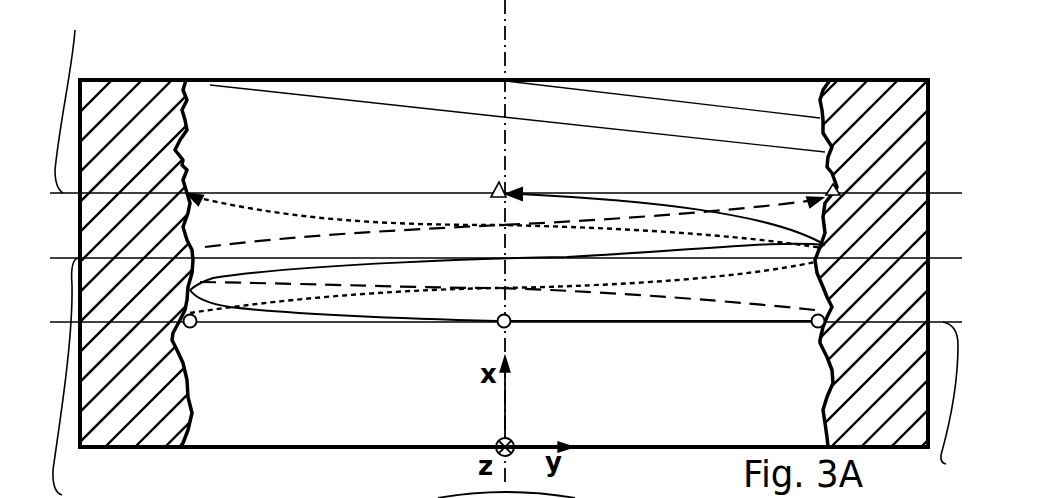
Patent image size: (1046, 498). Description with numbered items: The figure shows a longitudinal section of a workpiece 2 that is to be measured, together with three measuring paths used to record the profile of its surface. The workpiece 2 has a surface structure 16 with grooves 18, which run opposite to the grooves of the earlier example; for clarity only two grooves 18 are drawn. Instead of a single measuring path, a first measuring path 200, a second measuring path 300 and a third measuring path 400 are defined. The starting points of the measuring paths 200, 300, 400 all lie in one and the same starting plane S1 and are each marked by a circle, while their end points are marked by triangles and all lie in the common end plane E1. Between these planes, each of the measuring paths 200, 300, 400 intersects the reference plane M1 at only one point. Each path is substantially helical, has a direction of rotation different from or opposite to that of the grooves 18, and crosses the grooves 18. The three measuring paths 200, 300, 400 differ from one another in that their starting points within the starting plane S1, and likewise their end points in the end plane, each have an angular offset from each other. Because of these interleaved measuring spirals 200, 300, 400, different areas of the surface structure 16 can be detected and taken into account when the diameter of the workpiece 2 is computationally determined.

The workpiece 2 is at (186, 56).
The surface structure 16 is at (711, 115).
The grooves 18 is at (688, 104).
The first measuring path 200 is at (272, 311).
The second measuring path 300 is at (342, 293).
The third measuring path 400 is at (390, 233).
The end plane E1 is at (75, 97).
The reference plane M1 is at (74, 378).
The starting plane S1 is at (940, 409).